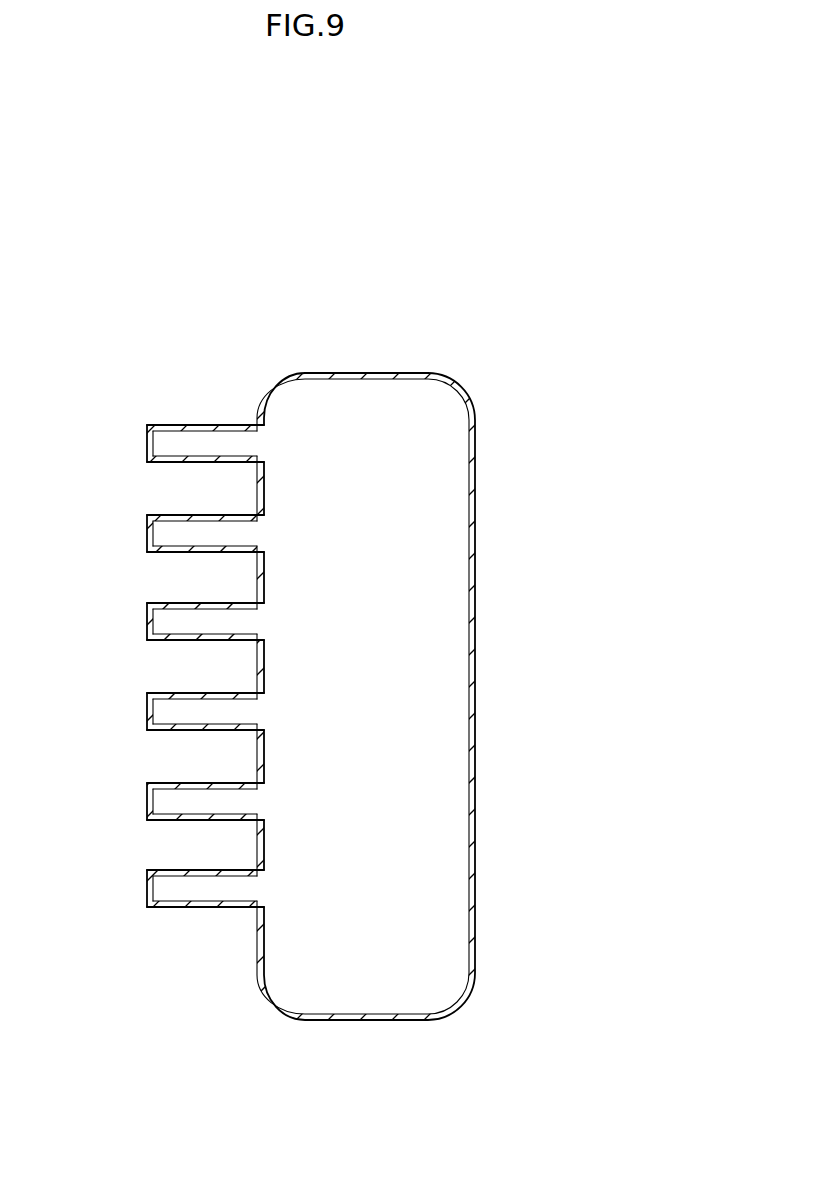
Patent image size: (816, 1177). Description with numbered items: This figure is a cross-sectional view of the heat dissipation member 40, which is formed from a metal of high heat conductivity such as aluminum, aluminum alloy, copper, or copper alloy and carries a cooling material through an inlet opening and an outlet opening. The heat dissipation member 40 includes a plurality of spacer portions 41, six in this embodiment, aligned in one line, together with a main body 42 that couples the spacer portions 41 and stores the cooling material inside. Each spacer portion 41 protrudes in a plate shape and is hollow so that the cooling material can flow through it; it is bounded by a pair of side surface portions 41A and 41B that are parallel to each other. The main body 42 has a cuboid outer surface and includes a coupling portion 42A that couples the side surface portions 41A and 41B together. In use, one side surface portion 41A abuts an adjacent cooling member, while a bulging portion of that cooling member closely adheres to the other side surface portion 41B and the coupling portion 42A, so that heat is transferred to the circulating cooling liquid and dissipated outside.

The heat dissipation member 40 is at (433, 340).
The spacer portion 41 is at (136, 443).
The side surface portion 41A is at (191, 425).
The side surface portion 41B is at (177, 462).
The main body 42 is at (366, 372).
The coupling portion 42A is at (257, 668).